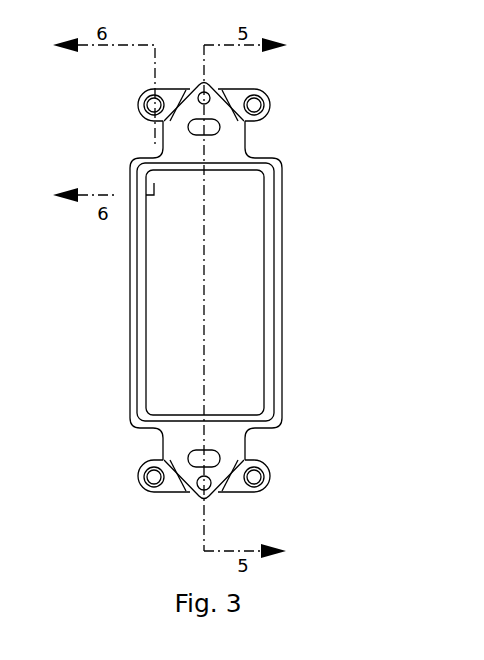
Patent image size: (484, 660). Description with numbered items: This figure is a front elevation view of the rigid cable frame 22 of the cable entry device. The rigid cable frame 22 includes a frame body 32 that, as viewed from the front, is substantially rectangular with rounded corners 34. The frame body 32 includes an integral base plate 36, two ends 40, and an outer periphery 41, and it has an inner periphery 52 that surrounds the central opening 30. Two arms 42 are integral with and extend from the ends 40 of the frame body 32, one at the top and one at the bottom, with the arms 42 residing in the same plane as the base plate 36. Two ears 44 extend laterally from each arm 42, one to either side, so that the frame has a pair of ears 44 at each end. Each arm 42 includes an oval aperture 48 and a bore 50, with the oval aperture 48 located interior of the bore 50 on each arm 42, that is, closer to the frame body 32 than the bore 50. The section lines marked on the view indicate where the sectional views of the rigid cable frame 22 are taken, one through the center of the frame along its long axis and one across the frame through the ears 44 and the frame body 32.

The rigid cable frame 22 is at (310, 410).
The opening 30 is at (188, 293).
The frame body 32 is at (284, 208).
The rounded corners 34 is at (276, 158).
The base plate 36 is at (275, 290).
The ends 40 is at (263, 432).
The outer periphery 41 is at (138, 158).
The arms 42 is at (183, 445).
The ears 44 is at (270, 93).
The oval aperture 48 is at (192, 462).
The bore 50 is at (197, 488).
The inner periphery 52 is at (148, 246).